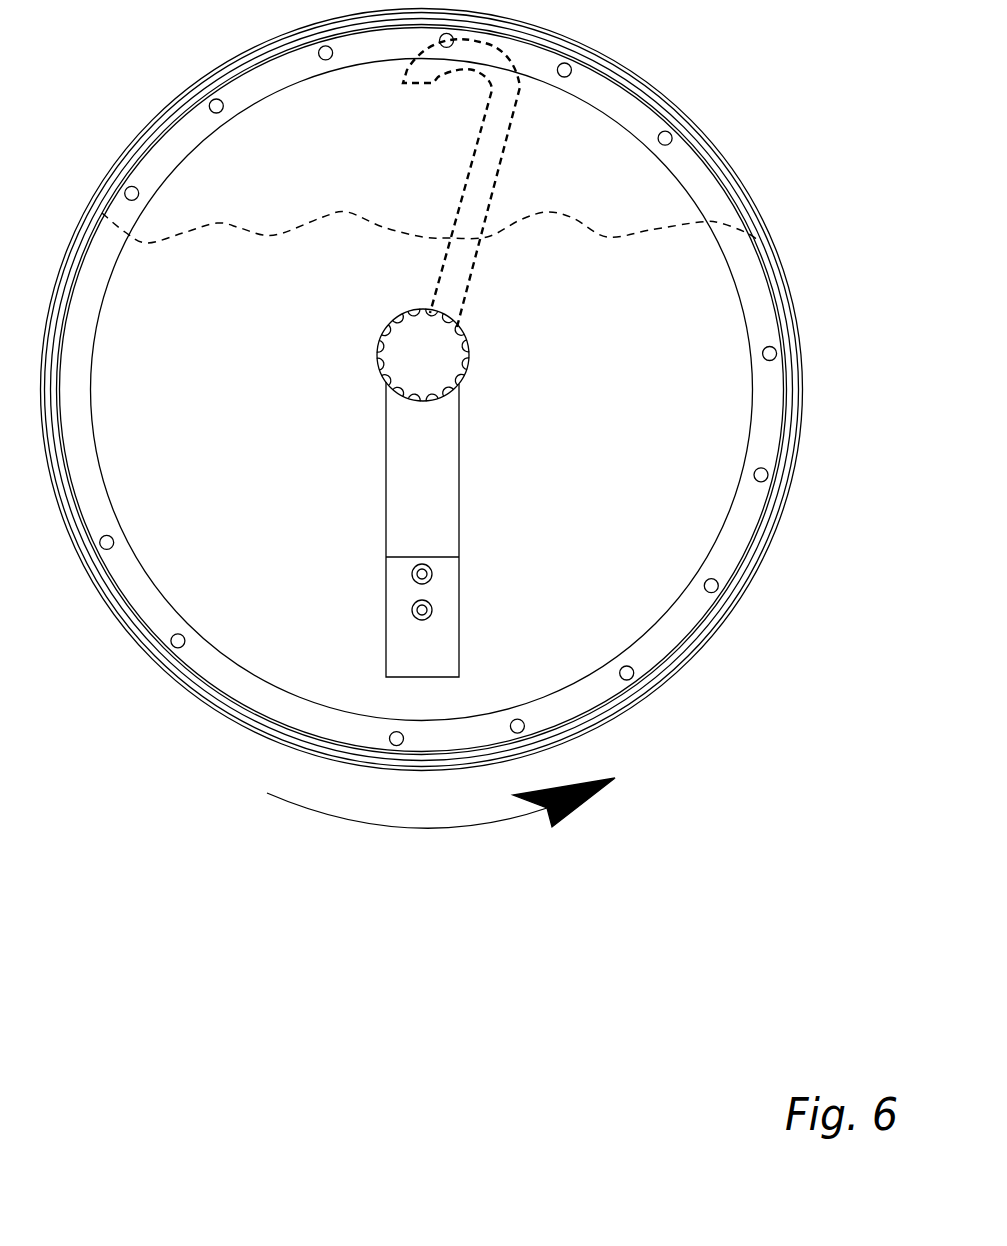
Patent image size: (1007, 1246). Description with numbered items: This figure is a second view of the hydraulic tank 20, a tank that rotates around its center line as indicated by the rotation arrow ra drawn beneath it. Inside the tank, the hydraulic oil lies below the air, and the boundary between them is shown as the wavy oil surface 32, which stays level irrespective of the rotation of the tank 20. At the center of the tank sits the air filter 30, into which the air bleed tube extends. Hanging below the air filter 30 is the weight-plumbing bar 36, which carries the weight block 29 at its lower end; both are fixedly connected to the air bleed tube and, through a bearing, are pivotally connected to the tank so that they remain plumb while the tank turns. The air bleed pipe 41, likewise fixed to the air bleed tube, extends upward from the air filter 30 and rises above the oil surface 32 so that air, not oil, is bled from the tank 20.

The hydraulic tank 20 is at (138, 640).
The weight block 29 is at (386, 590).
The air filter 30 is at (377, 333).
The oil surface 32 is at (618, 242).
The weight-plumbing bar 36 is at (385, 474).
The air bleed pipe 41 is at (476, 148).
The rotation arrow ra is at (362, 837).